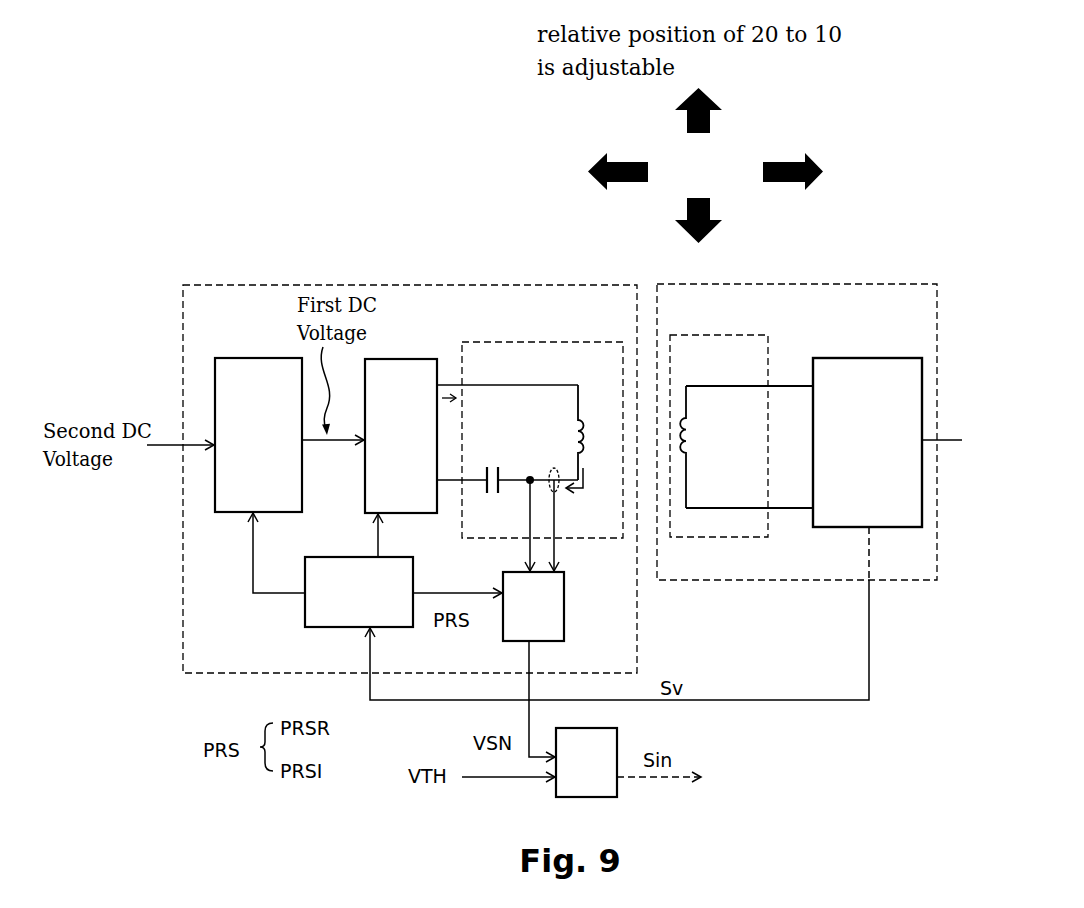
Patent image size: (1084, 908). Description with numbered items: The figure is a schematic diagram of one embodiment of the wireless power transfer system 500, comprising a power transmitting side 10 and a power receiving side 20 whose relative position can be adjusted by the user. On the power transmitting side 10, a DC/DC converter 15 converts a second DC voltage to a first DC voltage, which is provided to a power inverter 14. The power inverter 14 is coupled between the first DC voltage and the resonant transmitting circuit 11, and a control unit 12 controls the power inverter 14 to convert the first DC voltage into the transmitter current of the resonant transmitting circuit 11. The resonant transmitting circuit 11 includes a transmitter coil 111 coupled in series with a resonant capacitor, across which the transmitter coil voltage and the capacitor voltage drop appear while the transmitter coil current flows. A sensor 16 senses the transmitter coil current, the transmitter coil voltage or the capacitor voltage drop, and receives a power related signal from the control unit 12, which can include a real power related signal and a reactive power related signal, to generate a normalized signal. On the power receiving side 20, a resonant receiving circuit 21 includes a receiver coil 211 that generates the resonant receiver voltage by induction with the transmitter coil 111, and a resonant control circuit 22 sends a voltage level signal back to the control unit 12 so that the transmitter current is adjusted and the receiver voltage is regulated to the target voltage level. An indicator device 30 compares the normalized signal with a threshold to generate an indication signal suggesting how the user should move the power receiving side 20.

The wireless power transfer system 500 is at (382, 267).
The power transmitting side 10 is at (240, 326).
The DC/DC converter 15 is at (240, 447).
The power inverter 14 is at (385, 447).
The resonant transmitting circuit 11 is at (473, 369).
The transmitter coil 111 is at (568, 434).
The control unit 12 is at (370, 604).
The sensor 16 is at (521, 616).
The power receiving side 20 is at (903, 346).
The resonant receiving circuit 21 is at (743, 374).
The receiver coil 211 is at (703, 445).
The resonant control circuit 22 is at (857, 507).
The indicator device 30 is at (573, 774).